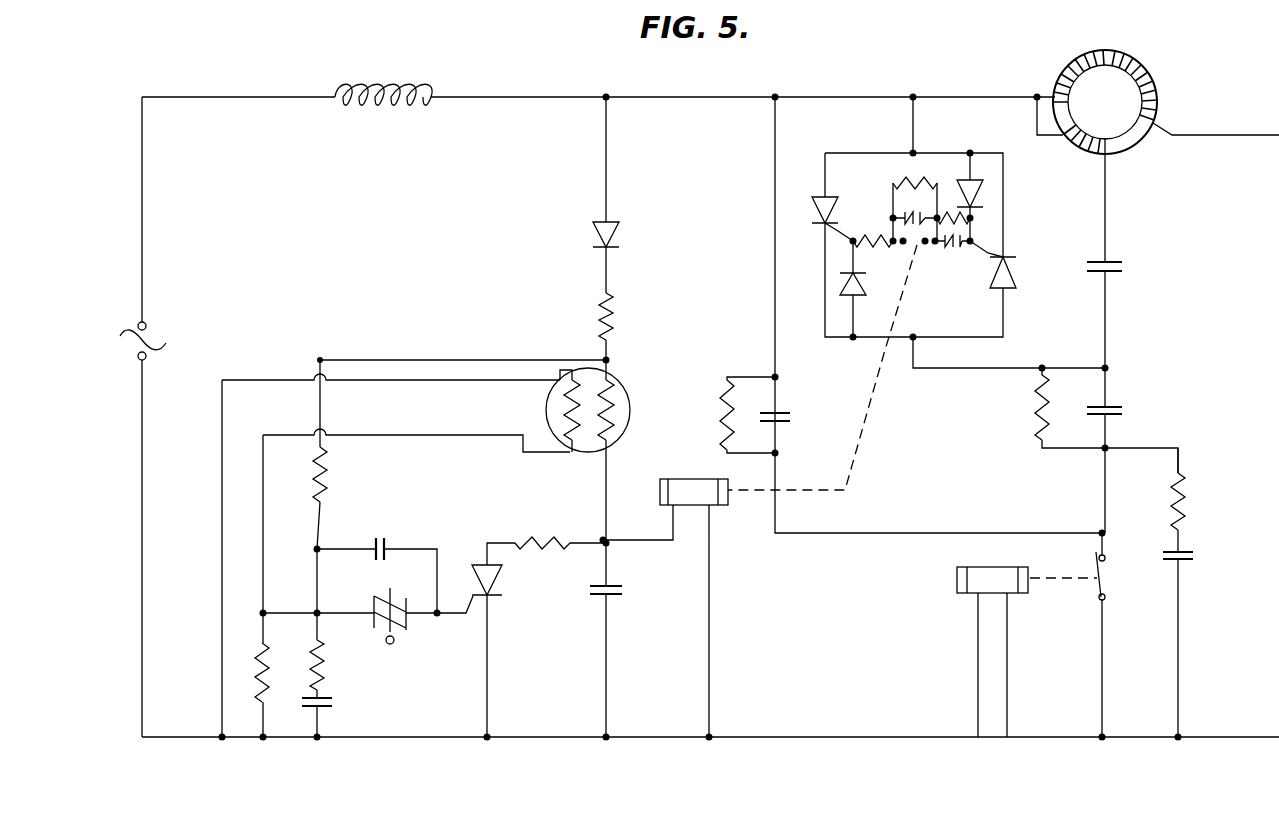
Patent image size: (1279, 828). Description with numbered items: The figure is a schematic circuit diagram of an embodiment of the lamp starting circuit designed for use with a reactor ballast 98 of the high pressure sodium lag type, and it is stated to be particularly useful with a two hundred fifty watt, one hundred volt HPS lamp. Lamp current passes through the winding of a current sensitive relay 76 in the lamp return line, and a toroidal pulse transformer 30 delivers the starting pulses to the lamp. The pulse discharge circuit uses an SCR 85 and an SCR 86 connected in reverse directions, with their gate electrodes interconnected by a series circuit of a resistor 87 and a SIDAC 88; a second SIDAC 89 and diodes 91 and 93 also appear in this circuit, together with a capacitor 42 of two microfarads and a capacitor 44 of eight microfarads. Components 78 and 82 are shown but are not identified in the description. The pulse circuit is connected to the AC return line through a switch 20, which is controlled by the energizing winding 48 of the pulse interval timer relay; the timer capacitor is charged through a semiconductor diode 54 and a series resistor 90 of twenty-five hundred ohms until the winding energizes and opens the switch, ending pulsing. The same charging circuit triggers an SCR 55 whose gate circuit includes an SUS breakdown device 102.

The reactor ballast 98 is at (375, 85).
The pulse transformer 30 is at (1166, 62).
The semiconductor diode 54 is at (594, 234).
The resistor 90 is at (610, 330).
The SCR 85 is at (822, 198).
The resistor 78 is at (910, 183).
The SIDAC 89 is at (907, 216).
The resistor 82 is at (955, 215).
The diode 93 is at (978, 197).
The resistor 87 is at (872, 243).
The SIDAC 88 is at (955, 243).
The diode 91 is at (840, 283).
The SCR 86 is at (1012, 283).
The switch 20 is at (920, 246).
The capacitor 42 is at (1120, 262).
The capacitor 44 is at (1115, 405).
The energizing winding 48 is at (668, 478).
The SCR 55 is at (500, 578).
The SUS breakdown device 102 is at (406, 626).
The current sensitive relay 76 is at (957, 580).